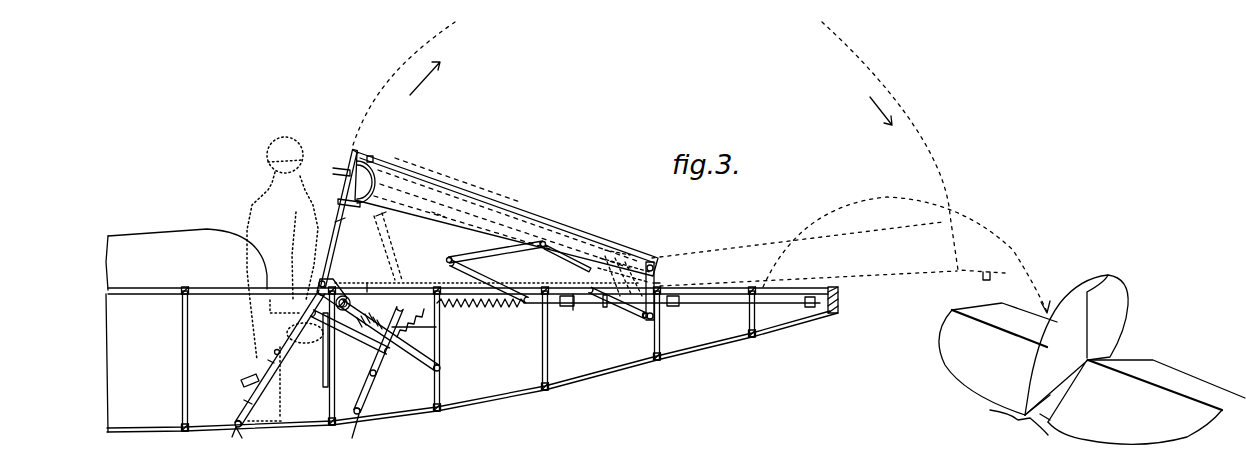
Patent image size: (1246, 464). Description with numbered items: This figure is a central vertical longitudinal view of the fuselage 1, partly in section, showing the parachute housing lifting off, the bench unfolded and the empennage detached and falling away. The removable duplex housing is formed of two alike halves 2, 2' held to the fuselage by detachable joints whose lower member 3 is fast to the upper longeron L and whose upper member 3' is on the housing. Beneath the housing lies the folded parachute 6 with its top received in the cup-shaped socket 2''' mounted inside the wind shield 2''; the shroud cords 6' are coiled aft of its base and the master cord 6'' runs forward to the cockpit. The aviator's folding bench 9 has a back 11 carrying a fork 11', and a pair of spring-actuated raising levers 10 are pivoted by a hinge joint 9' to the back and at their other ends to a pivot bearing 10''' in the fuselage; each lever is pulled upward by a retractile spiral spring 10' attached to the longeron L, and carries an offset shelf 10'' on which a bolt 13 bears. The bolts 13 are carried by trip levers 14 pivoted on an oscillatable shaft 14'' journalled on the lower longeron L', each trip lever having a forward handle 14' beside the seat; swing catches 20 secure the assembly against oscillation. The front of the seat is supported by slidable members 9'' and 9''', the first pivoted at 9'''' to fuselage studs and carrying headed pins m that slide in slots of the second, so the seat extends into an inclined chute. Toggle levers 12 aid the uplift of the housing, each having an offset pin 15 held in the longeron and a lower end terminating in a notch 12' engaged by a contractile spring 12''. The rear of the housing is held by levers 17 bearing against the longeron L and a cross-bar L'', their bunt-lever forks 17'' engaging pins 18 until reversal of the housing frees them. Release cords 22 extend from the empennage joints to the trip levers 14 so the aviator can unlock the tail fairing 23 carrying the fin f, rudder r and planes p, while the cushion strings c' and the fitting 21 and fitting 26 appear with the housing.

The fuselage 1 is at (472, 330).
The housing component 2 is at (506, 214).
The housing component 2' is at (359, 307).
The wind shield 2'' is at (342, 146).
The cup-shaped socket 2''' is at (378, 148).
The lower joint member 3 is at (467, 298).
The upper joint member 3' is at (504, 254).
The folded parachute 6 is at (432, 225).
The suspensory shroud cords 6' is at (621, 260).
The master cord 6'' is at (386, 249).
The folding bench 9 is at (280, 358).
The hinge joint 9' is at (319, 266).
The supporting member 9'' is at (265, 373).
The supporting member 9''' is at (231, 405).
The pivot 9'''' is at (244, 442).
The raising lever 10 is at (389, 342).
The retractile spiral spring 10' is at (428, 328).
The offset shelf 10'' is at (399, 360).
The pivot bearing 10''' is at (453, 370).
The bench back 11 is at (337, 228).
The fork 11' is at (375, 237).
The toggle lever 12 is at (519, 259).
The notch 12' is at (546, 310).
The spiral contractile spring 12'' is at (474, 319).
The bolt 13 is at (377, 374).
The trip lever 14 is at (379, 360).
The handle 14' is at (349, 336).
The oscillatable shaft 14'' is at (368, 426).
The offset pin 15 is at (518, 281).
The lever 17 is at (662, 291).
The fork 17'' is at (618, 307).
The pin 18 is at (600, 302).
The swing catch 20 is at (323, 364).
The fitting 21 is at (810, 302).
The release cord 22 is at (710, 296).
The fairing 23 is at (1020, 415).
The fitting 26 is at (334, 179).
The cushion parts c' is at (469, 181).
The upper longeron L is at (706, 280).
The lower longeron L' is at (499, 411).
The cross-bar L'' is at (661, 278).
The pin m is at (243, 381).
The stabilizer and elevator planes p is at (1092, 373).
The fin f is at (1076, 345).
The rudder r is at (1097, 316).